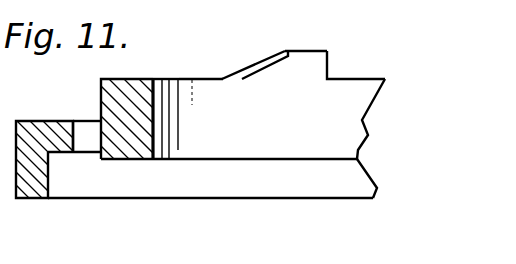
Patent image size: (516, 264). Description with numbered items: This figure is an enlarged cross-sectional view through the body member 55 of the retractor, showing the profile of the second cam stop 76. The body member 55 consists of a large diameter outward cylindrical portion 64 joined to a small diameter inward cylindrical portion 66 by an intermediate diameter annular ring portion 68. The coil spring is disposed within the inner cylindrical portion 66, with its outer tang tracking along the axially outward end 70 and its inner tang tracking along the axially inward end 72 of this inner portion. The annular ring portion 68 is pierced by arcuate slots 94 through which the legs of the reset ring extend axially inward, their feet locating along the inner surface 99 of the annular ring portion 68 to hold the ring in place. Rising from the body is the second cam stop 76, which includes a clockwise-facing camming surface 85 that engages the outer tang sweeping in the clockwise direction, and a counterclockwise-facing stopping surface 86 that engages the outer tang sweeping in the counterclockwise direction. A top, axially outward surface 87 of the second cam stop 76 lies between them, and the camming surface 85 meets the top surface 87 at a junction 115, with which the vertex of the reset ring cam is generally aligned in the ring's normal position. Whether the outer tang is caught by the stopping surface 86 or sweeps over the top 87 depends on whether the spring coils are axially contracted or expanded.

The body member 55 is at (368, 204).
The large diameter outward cylindrical portion 64 is at (33, 186).
The small diameter inward cylindrical portion 66 is at (234, 143).
The intermediate diameter annular ring portion 68 is at (47, 137).
The axially outward end 70 is at (168, 78).
The axially inward end 72 is at (167, 162).
The second cam stop 76 is at (299, 68).
The camming surface 85 is at (245, 68).
The stopping surface 86 is at (328, 60).
The top surface 87 is at (284, 51).
The arcuate slots 94 is at (82, 138).
The inner surface 99 is at (57, 155).
The junction 115 is at (289, 56).